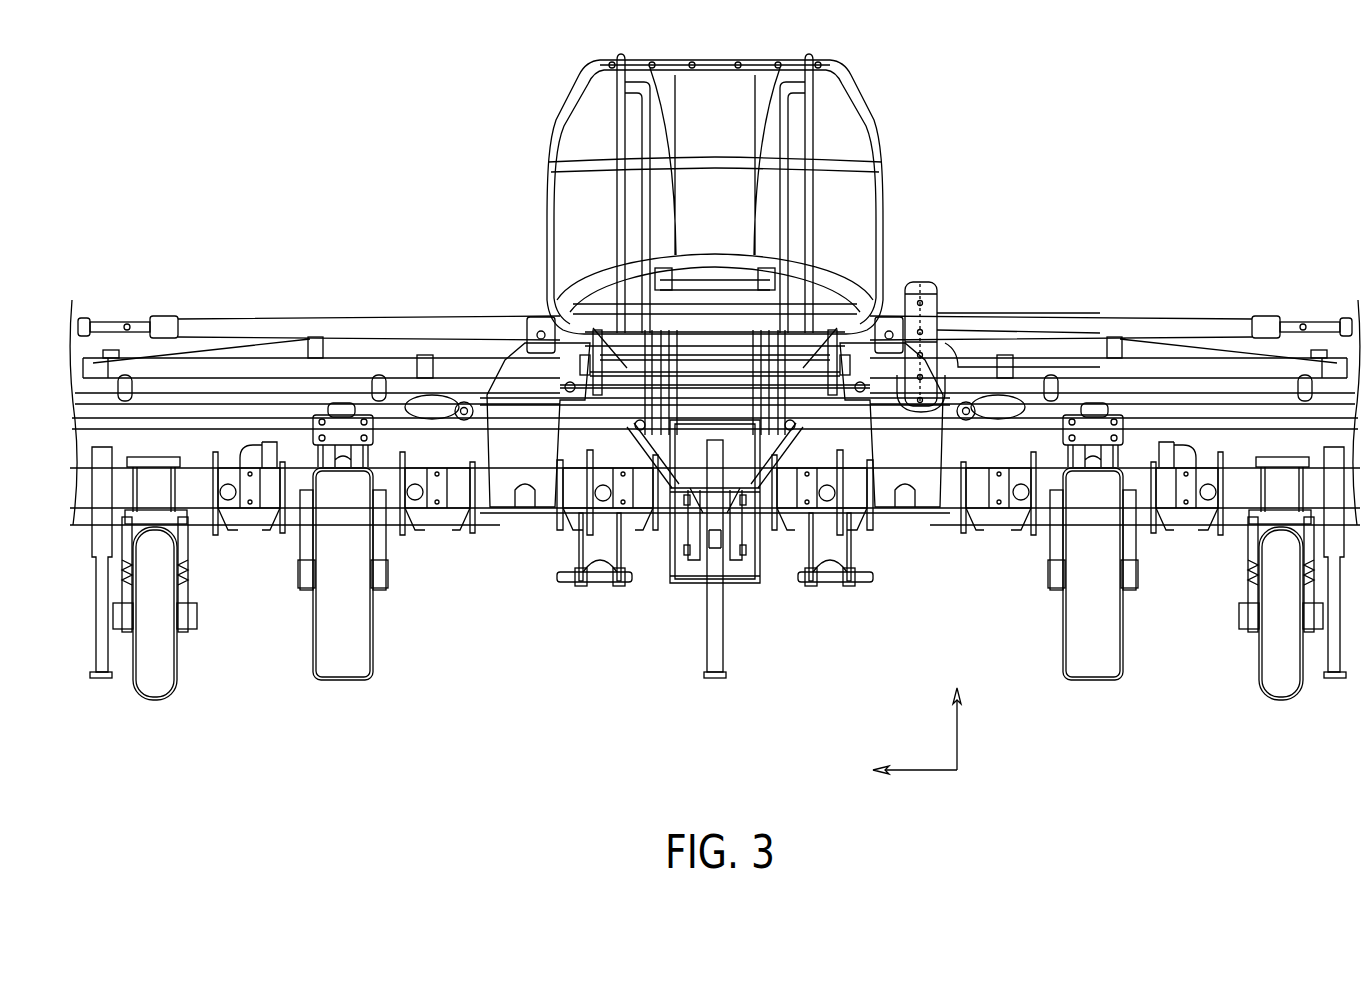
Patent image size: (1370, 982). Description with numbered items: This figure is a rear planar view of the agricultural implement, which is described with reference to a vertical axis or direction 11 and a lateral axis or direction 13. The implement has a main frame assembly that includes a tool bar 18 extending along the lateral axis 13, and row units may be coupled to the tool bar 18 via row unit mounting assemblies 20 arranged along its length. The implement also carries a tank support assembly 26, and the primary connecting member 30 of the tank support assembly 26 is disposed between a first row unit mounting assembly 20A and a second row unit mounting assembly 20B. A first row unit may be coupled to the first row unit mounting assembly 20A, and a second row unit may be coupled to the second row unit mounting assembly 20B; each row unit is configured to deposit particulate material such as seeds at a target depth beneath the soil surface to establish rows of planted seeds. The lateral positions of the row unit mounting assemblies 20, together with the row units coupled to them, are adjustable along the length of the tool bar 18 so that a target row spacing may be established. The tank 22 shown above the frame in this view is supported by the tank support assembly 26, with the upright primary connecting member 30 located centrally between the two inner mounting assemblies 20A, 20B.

The vertical axis 11 is at (957, 735).
The lateral axis 13 is at (920, 772).
The tool bar 18 is at (918, 512).
The row unit mounting assemblies 20 is at (272, 525).
The first row unit mounting assembly 20A is at (590, 516).
The second row unit mounting assembly 20B is at (795, 535).
The tank 22 is at (880, 122).
The tank support assembly 26 is at (642, 600).
The primary connecting member 30 is at (708, 555).